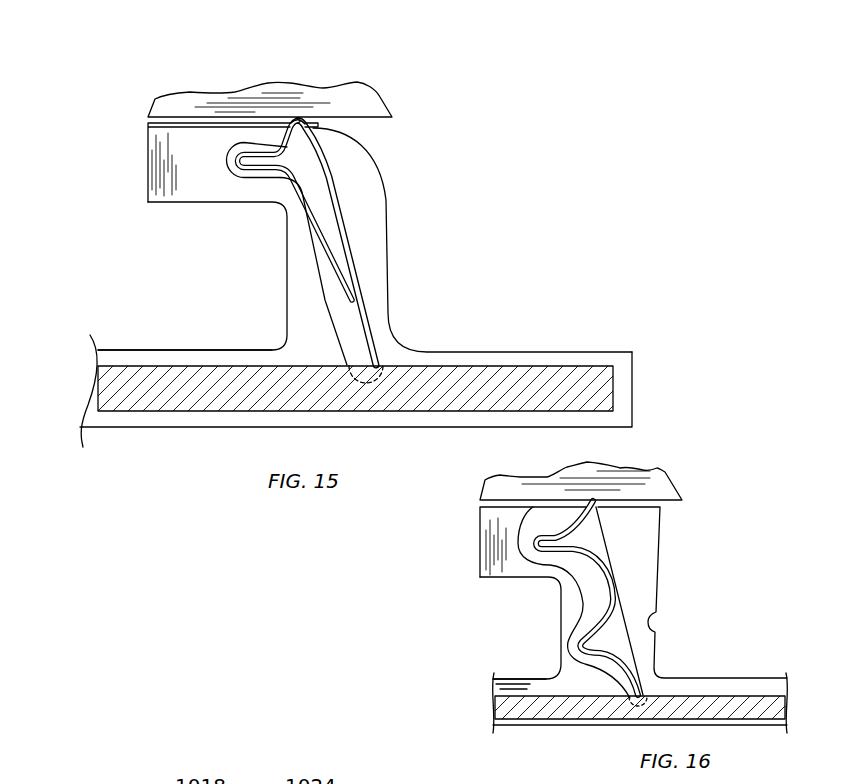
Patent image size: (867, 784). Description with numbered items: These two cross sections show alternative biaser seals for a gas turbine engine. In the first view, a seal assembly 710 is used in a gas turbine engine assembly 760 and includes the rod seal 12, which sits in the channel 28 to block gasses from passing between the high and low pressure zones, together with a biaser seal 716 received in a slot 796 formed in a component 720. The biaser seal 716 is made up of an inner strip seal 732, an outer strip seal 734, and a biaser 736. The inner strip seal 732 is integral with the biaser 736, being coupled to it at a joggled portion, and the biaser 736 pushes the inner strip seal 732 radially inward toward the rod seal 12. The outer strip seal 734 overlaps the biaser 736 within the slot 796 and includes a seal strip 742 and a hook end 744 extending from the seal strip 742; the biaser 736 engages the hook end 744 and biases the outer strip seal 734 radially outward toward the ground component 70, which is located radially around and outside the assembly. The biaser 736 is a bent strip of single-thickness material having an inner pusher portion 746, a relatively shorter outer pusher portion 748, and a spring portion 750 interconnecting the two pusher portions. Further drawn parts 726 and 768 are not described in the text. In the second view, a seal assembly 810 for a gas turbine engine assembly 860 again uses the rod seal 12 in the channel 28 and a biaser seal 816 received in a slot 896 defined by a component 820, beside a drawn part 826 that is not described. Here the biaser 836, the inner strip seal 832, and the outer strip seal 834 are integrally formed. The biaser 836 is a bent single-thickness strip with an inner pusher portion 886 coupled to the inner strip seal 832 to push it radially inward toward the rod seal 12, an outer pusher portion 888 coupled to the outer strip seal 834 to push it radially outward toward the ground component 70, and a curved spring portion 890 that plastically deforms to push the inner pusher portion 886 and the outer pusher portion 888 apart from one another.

In FIG. 15, the gas turbine engine assembly 760 is at (118, 78).
In FIG. 15, the seal assembly 710 is at (459, 91).
In FIG. 15, the ground component 70 is at (340, 90).
In FIG. 16, the ground component 70 is at (655, 490).
In FIG. 15, the outer pusher portion 748 is at (265, 138).
In FIG. 15, the spring portion 750 is at (236, 142).
In FIG. 15, the hook end 744 is at (300, 116).
In FIG. 15, the block 726 is at (147, 170).
In FIG. 15, the biaser 736 is at (240, 184).
In FIG. 15, the biaser seal 716 is at (250, 212).
In FIG. 15, the inner pusher portion 746 is at (313, 253).
In FIG. 15, the outer strip seal 734 is at (328, 163).
In FIG. 15, the slot 796 is at (346, 208).
In FIG. 15, the seal strip 742 is at (351, 244).
In FIG. 15, the inner strip seal 732 is at (372, 333).
In FIG. 15, the component 720 is at (533, 350).
In FIG. 15, the housing plate 768 is at (576, 357).
In FIG. 15, the rod seal 12 is at (118, 357).
In FIG. 16, the rod seal 12 is at (510, 683).
In FIG. 15, the channel 28 is at (165, 348).
In FIG. 16, the channel 28 is at (540, 676).
In FIG. 16, the seal assembly 810 is at (725, 497).
In FIG. 16, the outer strip seal 834 is at (568, 516).
In FIG. 16, the outer pusher portion 888 is at (532, 521).
In FIG. 16, the block 826 is at (478, 545).
In FIG. 16, the gas turbine engine assembly 860 is at (395, 578).
In FIG. 16, the biaser 836 is at (605, 553).
In FIG. 16, the spring portion 890 is at (620, 583).
In FIG. 16, the biaser seal 816 is at (546, 570).
In FIG. 16, the slot 896 is at (613, 633).
In FIG. 16, the inner strip seal 832 is at (627, 661).
In FIG. 16, the component 820 is at (757, 676).
In FIG. 16, the inner pusher portion 886 is at (583, 663).